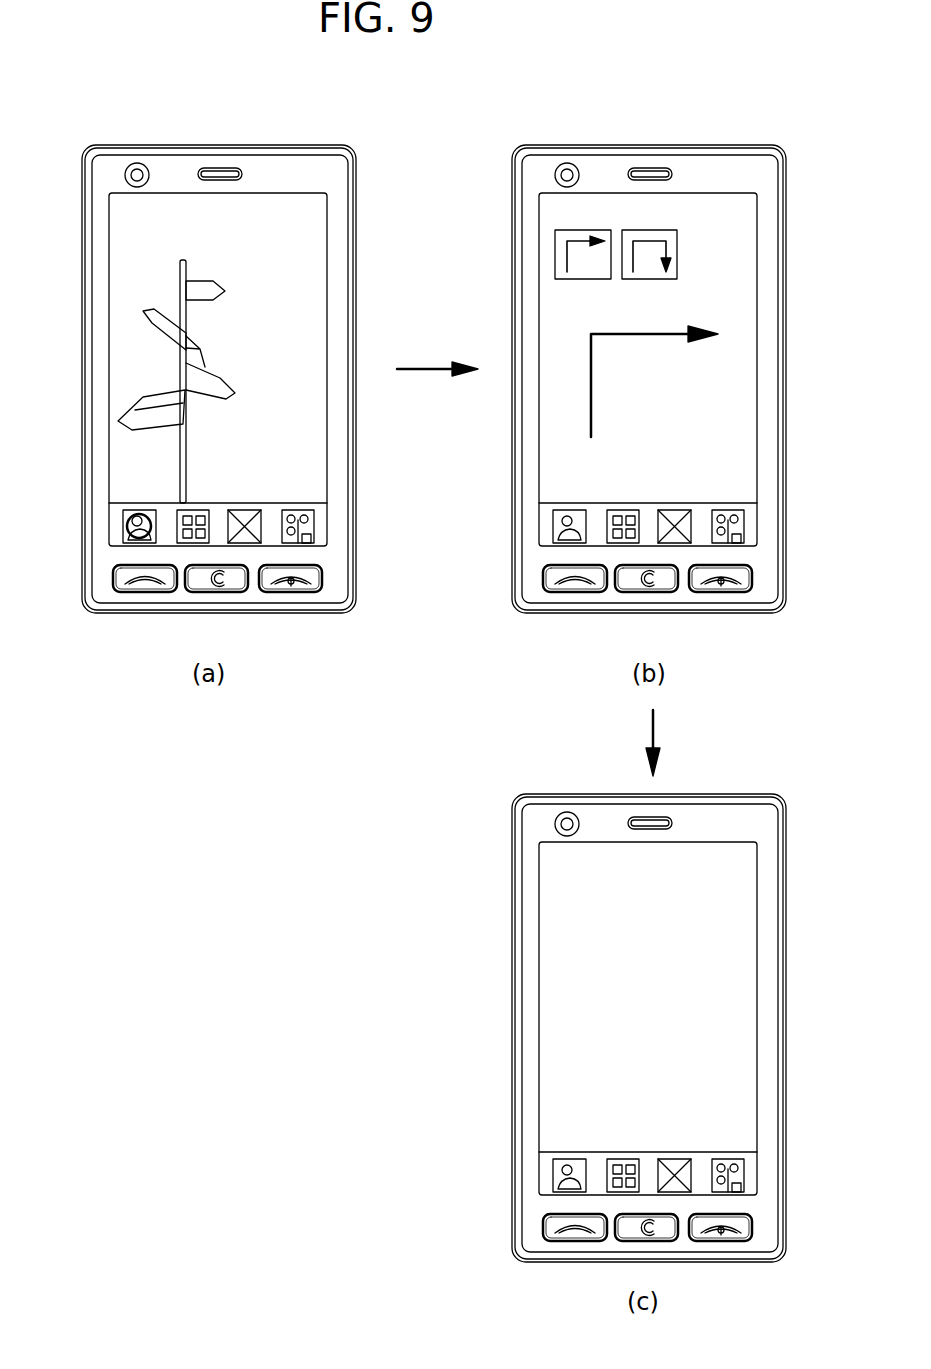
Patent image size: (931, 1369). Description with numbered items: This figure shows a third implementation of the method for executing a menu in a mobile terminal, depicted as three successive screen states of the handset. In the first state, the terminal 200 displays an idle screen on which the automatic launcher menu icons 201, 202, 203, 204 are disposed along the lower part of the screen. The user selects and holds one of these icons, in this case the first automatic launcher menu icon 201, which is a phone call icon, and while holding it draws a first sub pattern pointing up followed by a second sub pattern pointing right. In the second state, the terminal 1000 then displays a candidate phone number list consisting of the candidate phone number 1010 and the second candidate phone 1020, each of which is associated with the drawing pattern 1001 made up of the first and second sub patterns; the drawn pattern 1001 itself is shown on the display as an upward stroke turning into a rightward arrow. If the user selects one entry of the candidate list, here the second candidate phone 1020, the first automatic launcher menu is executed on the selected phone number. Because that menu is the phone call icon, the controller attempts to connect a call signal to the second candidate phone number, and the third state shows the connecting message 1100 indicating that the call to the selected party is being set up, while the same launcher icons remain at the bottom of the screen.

The mobile terminal displaying signpost screen 200 is at (284, 207).
The first automatic launcher menu icon 201 is at (135, 544).
The automatic launcher menu icon 202 is at (185, 544).
The automatic launcher menu icon 203 is at (253, 544).
The automatic launcher menu icon 204 is at (315, 545).
The mobile terminal displaying gesture items 1000 is at (738, 192).
The candidate phone number 1010 is at (555, 237).
The second candidate phone 1020 is at (615, 230).
The drawing pattern 1001 is at (591, 413).
The connecting message 1100 is at (558, 963).